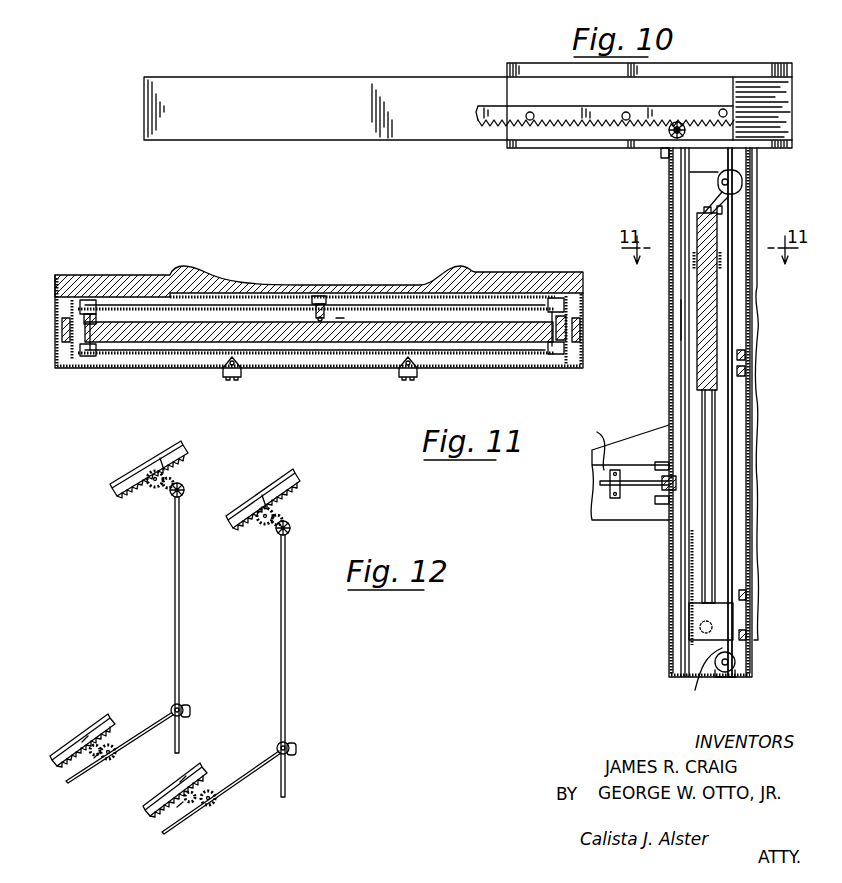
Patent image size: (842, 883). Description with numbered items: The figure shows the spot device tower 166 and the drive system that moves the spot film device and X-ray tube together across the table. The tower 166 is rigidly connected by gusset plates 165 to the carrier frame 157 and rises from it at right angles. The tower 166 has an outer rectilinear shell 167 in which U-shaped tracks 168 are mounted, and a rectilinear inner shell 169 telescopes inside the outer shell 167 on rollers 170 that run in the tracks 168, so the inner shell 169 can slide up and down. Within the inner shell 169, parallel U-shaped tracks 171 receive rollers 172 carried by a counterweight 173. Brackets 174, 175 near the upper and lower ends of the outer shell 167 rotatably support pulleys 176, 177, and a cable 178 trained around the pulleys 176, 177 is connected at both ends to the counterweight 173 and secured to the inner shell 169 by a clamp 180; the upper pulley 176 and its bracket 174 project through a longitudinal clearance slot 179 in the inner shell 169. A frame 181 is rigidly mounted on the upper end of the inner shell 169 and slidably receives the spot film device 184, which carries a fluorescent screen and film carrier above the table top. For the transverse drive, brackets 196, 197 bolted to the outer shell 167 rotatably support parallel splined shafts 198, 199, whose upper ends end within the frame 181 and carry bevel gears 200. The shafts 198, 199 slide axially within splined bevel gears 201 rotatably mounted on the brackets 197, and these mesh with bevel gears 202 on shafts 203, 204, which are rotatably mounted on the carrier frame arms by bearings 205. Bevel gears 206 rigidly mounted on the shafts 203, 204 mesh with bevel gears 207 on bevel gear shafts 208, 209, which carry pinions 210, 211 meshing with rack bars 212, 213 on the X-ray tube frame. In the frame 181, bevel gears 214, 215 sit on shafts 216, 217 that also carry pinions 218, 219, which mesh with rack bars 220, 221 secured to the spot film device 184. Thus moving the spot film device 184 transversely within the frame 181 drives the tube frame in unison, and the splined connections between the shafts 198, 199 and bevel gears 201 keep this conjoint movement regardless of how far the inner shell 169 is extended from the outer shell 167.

In FIG. 10, the carrier frame 157 is at (660, 423).
In FIG. 10, the gusset plates 165 is at (585, 443).
In FIG. 10, the spot device tower 166 is at (761, 299).
In FIG. 10, the outer rectilinear shell 167 is at (733, 199).
In FIG. 11, the outer rectilinear shell 167 is at (155, 368).
In FIG. 11, the U-shaped tracks 168 is at (62, 312).
In FIG. 10, the rectilinear inner shell 169 is at (688, 643).
In FIG. 11, the rectilinear inner shell 169 is at (400, 303).
In FIG. 10, the rollers 170 is at (701, 623).
In FIG. 11, the rollers 170 is at (82, 299).
In FIG. 11, the U-shaped tracks 171 is at (102, 318).
In FIG. 11, the rollers 172 is at (97, 344).
In FIG. 10, the counterweight 173 is at (697, 343).
In FIG. 11, the counterweight 173 is at (370, 321).
In FIG. 10, the bracket 174 is at (740, 171).
In FIG. 10, the bracket 175 is at (727, 673).
In FIG. 11, the bracket 175 is at (338, 319).
In FIG. 10, the pulley 176 is at (700, 181).
In FIG. 10, the pulley 177 is at (733, 656).
In FIG. 11, the pulley 177 is at (313, 299).
In FIG. 10, the cable 178 is at (700, 199).
In FIG. 11, the cable 178 is at (322, 296).
In FIG. 10, the longitudinal clearance slot 179 is at (722, 213).
In FIG. 11, the longitudinal clearance slot 179 is at (326, 305).
In FIG. 10, the clamp 180 is at (739, 592).
In FIG. 10, the frame 181 is at (745, 64).
In FIG. 10, the spot film device 184 is at (418, 77).
In FIG. 10, the brackets 196 is at (663, 155).
In FIG. 10, the brackets 197 is at (665, 483).
In FIG. 10, the splined shaft 198 is at (682, 323).
In FIG. 11, the splined shaft 198 is at (408, 378).
In FIG. 12, the splined shaft 198 is at (287, 624).
In FIG. 11, the splined shaft 199 is at (235, 378).
In FIG. 12, the splined shaft 199 is at (180, 614).
In FIG. 12, the bevel gears 200 is at (184, 488).
In FIG. 12, the bevel gears 201 is at (190, 711).
In FIG. 12, the bevel gears 202 is at (171, 703).
In FIG. 10, the shaft 203 is at (662, 497).
In FIG. 12, the shaft 203 is at (135, 730).
In FIG. 12, the shaft 204 is at (244, 780).
In FIG. 10, the bearings 205 is at (600, 482).
In FIG. 12, the bevel gears 206 is at (111, 760).
In FIG. 12, the bevel gears 207 is at (99, 745).
In FIG. 12, the bevel gear shaft 208 is at (94, 758).
In FIG. 12, the bevel gear shaft 209 is at (178, 807).
In FIG. 12, the pinion 210 is at (181, 775).
In FIG. 12, the pinion 211 is at (81, 742).
In FIG. 12, the rack bar 212 is at (144, 811).
In FIG. 12, the rack bar 213 is at (52, 763).
In FIG. 12, the bevel gear 214 is at (281, 509).
In FIG. 12, the bevel gear 215 is at (173, 479).
In FIG. 12, the shaft 216 is at (268, 523).
In FIG. 12, the shaft 217 is at (156, 489).
In FIG. 12, the pinion 218 is at (263, 508).
In FIG. 12, the pinion 219 is at (162, 457).
In FIG. 12, the rack bar 220 is at (229, 524).
In FIG. 12, the rack bar 221 is at (113, 493).